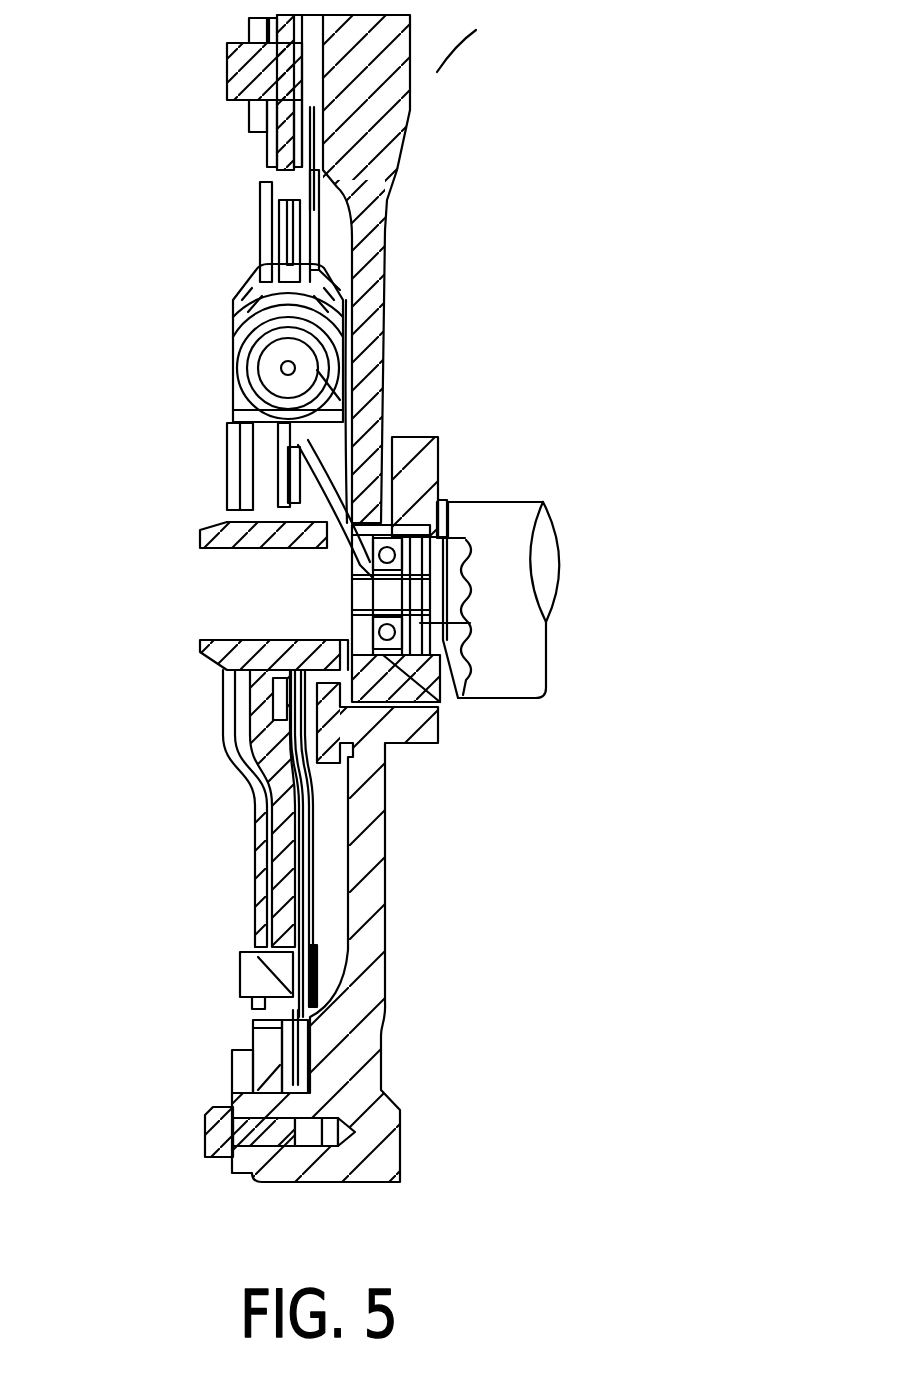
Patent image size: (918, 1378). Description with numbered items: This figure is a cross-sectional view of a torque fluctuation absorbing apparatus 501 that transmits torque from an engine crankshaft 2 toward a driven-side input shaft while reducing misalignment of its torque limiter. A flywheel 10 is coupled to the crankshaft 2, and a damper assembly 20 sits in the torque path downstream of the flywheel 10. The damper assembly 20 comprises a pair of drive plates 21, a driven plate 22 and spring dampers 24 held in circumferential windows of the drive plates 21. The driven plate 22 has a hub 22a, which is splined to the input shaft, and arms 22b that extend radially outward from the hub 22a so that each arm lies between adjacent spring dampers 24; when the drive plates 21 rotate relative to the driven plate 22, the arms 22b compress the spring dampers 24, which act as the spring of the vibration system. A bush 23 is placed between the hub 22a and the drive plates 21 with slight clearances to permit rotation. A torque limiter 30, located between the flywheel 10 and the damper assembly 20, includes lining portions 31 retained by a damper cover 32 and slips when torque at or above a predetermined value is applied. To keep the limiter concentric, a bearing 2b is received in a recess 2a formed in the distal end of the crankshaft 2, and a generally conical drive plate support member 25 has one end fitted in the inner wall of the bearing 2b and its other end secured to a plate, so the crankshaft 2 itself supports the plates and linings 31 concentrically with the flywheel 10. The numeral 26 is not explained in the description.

The torque fluctuation absorbing apparatus 501 is at (492, 38).
The flywheel 10 is at (387, 123).
The engine crankshaft 2 is at (505, 562).
The recess 2a is at (470, 623).
The bearing 2b is at (440, 693).
The damper assembly 20 is at (196, 843).
The drive plates 21 is at (260, 835).
The driven plate 22 is at (182, 681).
The hub 22a is at (210, 528).
The arms 22b is at (240, 470).
The bush 23 is at (295, 503).
The spring dampers 24 is at (243, 362).
The drive plate support member 25 is at (340, 508).
The bearing 26 is at (355, 628).
The torque limiter 30 is at (211, 1085).
The lining portions 31 is at (245, 1132).
The damper cover 32 is at (245, 1062).